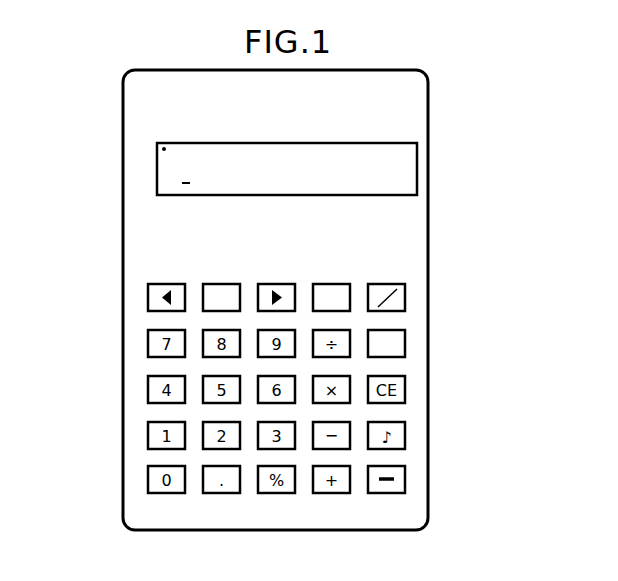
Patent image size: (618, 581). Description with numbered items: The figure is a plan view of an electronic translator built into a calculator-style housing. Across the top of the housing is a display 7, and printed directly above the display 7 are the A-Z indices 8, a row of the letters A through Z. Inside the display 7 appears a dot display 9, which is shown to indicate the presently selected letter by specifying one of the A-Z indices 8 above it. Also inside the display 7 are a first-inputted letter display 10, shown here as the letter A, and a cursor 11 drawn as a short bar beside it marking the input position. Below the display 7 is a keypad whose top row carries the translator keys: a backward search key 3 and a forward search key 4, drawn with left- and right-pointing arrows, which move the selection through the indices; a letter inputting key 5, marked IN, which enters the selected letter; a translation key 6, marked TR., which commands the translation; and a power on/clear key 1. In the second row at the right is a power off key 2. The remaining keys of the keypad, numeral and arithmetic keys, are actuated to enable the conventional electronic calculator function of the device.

The power on/clear key 1 is at (405, 297).
The power off key 2 is at (400, 345).
The backward search key 3 is at (148, 297).
The forward search key 4 is at (278, 283).
The letter inputting key 5 is at (218, 311).
The translation key 6 is at (338, 283).
The display 7 is at (413, 163).
The A-Z indices 8 is at (403, 110).
The dot display 9 is at (162, 149).
The first-inputted letter display 10 is at (167, 191).
The cursor 11 is at (183, 187).